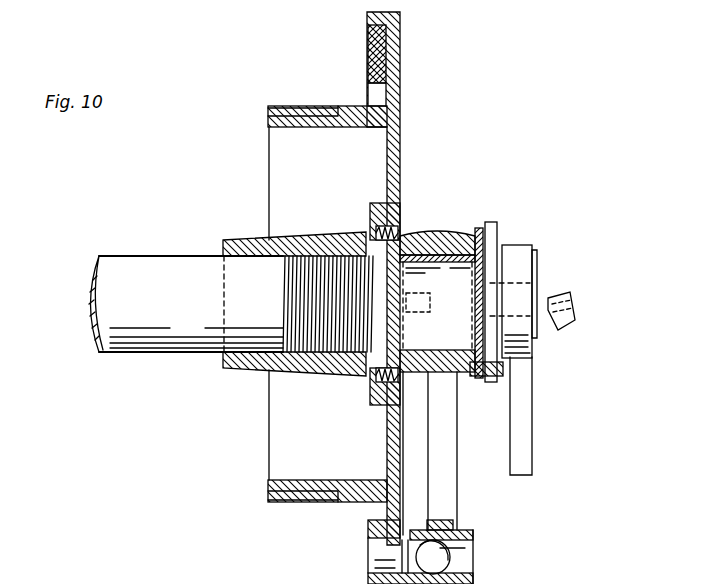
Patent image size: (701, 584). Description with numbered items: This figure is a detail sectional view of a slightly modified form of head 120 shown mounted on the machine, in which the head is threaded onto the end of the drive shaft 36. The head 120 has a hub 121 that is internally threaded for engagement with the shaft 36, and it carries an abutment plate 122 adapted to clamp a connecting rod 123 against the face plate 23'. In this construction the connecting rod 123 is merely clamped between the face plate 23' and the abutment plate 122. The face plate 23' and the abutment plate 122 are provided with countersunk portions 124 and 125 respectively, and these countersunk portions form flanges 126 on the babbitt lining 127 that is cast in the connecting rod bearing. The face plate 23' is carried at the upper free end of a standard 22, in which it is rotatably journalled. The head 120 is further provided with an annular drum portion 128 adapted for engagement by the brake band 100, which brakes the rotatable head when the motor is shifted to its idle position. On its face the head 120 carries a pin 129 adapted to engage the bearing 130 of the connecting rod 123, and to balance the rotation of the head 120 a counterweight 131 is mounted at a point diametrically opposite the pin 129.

The head 120 is at (402, 160).
The counterweight 131 is at (383, 62).
The brake band 100 is at (306, 502).
The annular drum portion 128 is at (270, 488).
The hub 121 is at (262, 237).
The countersunk portion 125 is at (393, 287).
The drive shaft 36 is at (140, 348).
The abutment plate 122 is at (420, 234).
The flanges 126 is at (383, 396).
The connecting rod 123 is at (500, 228).
The face plate 23' is at (528, 291).
The countersunk portion 124 is at (462, 274).
The babbitt lining 127 is at (432, 378).
The standard 22 is at (522, 443).
The bearing 130 is at (470, 548).
The pin 129 is at (450, 564).